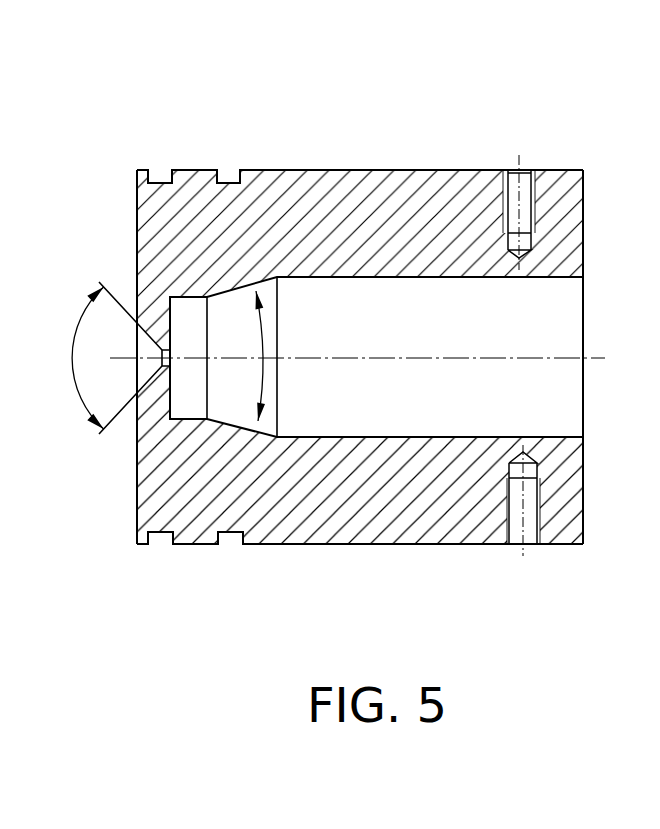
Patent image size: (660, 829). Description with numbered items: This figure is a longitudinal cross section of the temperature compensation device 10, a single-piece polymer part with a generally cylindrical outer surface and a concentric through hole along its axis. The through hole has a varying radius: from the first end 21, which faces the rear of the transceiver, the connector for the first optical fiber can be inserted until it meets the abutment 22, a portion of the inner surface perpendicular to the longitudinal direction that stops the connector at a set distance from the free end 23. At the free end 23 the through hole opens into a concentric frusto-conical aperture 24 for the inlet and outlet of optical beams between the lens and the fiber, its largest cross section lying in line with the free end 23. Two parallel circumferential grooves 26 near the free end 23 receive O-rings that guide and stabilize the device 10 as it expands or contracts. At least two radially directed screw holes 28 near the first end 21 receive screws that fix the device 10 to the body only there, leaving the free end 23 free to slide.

The temperature compensation device 10 is at (375, 130).
The first end 21 is at (583, 208).
The abutment 22 is at (170, 386).
The free end 23 is at (135, 237).
The frusto-conical aperture 24 is at (148, 368).
The circumferential grooves 26 is at (228, 178).
The screw holes 28 is at (512, 202).